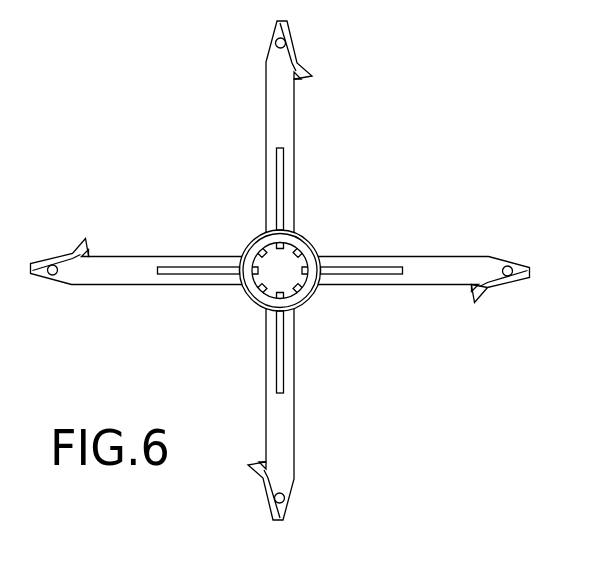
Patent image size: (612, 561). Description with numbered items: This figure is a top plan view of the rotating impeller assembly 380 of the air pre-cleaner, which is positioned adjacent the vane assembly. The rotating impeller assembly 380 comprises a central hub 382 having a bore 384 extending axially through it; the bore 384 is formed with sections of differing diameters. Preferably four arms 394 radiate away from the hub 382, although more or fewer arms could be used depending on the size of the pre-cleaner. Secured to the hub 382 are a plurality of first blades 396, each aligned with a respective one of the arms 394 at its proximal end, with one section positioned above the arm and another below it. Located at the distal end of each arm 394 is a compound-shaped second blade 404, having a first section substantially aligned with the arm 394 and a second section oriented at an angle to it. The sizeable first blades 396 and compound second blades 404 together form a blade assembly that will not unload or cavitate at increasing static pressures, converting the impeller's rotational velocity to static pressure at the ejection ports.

The rotating impeller assembly 380 is at (248, 234).
The hub 382 is at (313, 237).
The bore 384 is at (284, 273).
The arm 394 is at (172, 287).
The first blade 396 is at (383, 257).
The second blade 404 is at (487, 291).